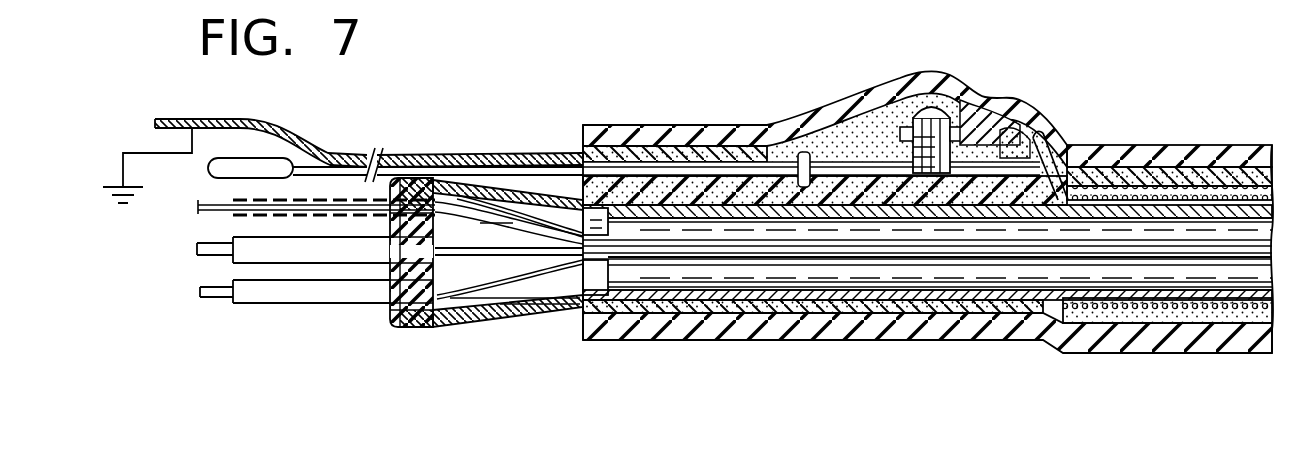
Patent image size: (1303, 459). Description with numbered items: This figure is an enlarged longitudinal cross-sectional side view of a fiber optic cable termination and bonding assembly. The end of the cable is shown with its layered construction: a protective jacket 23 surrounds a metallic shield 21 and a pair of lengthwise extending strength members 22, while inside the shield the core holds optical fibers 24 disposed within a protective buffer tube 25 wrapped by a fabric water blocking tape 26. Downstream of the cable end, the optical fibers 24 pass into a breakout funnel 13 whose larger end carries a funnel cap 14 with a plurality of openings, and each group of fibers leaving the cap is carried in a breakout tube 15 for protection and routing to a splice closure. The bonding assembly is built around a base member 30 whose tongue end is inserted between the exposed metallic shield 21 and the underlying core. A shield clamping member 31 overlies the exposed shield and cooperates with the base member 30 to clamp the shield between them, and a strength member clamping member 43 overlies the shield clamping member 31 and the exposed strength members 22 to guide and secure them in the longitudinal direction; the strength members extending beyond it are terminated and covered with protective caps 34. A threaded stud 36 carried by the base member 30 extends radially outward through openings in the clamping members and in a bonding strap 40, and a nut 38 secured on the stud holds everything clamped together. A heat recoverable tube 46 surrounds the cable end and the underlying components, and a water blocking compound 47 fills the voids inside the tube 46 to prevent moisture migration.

The breakout funnel 13 is at (482, 187).
The funnel cap 14 is at (388, 308).
The breakout tube 15 is at (346, 287).
The metallic shield 21 is at (1187, 180).
The strength members 22 is at (1075, 132).
The protective jacket 23 is at (1163, 320).
The optical fibers 24 is at (862, 258).
The protective buffer tube 25 is at (757, 317).
The fabric water blocking tape 26 is at (933, 338).
The base member 30 is at (890, 197).
The shield clamping member 31 is at (1173, 197).
The protective caps 34 is at (250, 160).
The threaded stud 36 is at (883, 190).
The nut 38 is at (998, 125).
The bonding strap 40 is at (1007, 120).
The strength member clamping member 43 is at (1042, 137).
The tube 46 is at (708, 130).
The water blocking compound 47 is at (635, 147).